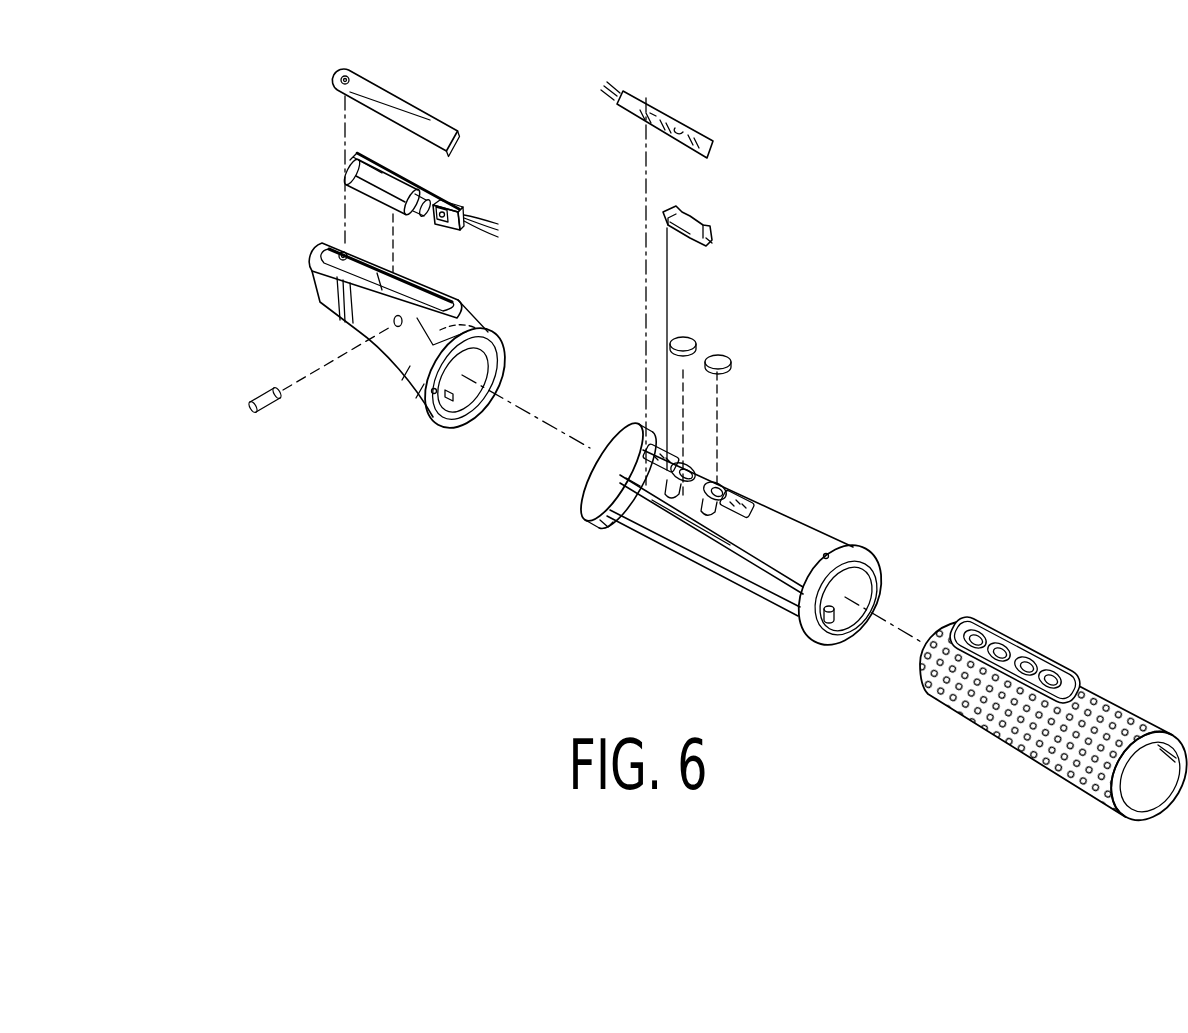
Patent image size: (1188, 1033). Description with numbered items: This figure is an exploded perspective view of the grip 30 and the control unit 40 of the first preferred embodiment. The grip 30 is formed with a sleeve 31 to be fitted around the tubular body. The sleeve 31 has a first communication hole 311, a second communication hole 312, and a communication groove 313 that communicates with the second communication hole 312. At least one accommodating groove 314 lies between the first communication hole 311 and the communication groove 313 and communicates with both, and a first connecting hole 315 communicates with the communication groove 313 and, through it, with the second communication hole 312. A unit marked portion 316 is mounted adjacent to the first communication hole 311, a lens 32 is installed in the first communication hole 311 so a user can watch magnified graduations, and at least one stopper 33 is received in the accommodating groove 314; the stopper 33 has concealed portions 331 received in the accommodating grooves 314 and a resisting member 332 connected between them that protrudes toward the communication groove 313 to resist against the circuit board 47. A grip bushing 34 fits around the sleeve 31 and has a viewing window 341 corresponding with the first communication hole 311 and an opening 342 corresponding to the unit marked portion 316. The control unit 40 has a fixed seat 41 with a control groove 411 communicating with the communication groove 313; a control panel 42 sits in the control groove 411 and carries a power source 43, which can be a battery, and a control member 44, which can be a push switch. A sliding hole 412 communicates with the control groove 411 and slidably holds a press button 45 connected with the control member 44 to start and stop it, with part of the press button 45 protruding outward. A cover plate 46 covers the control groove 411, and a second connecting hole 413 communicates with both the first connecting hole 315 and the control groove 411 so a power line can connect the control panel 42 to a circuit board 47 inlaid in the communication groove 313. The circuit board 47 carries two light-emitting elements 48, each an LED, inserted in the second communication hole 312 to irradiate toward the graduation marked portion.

The grip 30 is at (684, 526).
The sleeve 31 is at (806, 630).
The first communication hole 311 is at (716, 490).
The second communication hole 312 is at (658, 492).
The communication groove 313 is at (608, 523).
The accommodating groove 314 is at (718, 508).
The first connecting hole 315 is at (623, 452).
The unit marked portion 316 is at (750, 505).
The lens 32 is at (690, 343).
The stopper 33 is at (743, 239).
The concealed portion 331 is at (713, 244).
The resisting member 332 is at (690, 238).
The grip bushing 34 is at (1054, 678).
The viewing window 341 is at (998, 648).
The opening 342 is at (966, 628).
The control unit 40 is at (369, 349).
The fixed seat 41 is at (338, 297).
The control groove 411 is at (438, 302).
The sliding hole 412 is at (397, 326).
The second connecting hole 413 is at (482, 329).
The control panel 42 is at (448, 190).
The power source 43 is at (350, 173).
The control member 44 is at (440, 222).
The press button 45 is at (252, 395).
The cover plate 46 is at (412, 93).
The circuit board 47 is at (635, 110).
The light-emitting element 48 is at (660, 118).